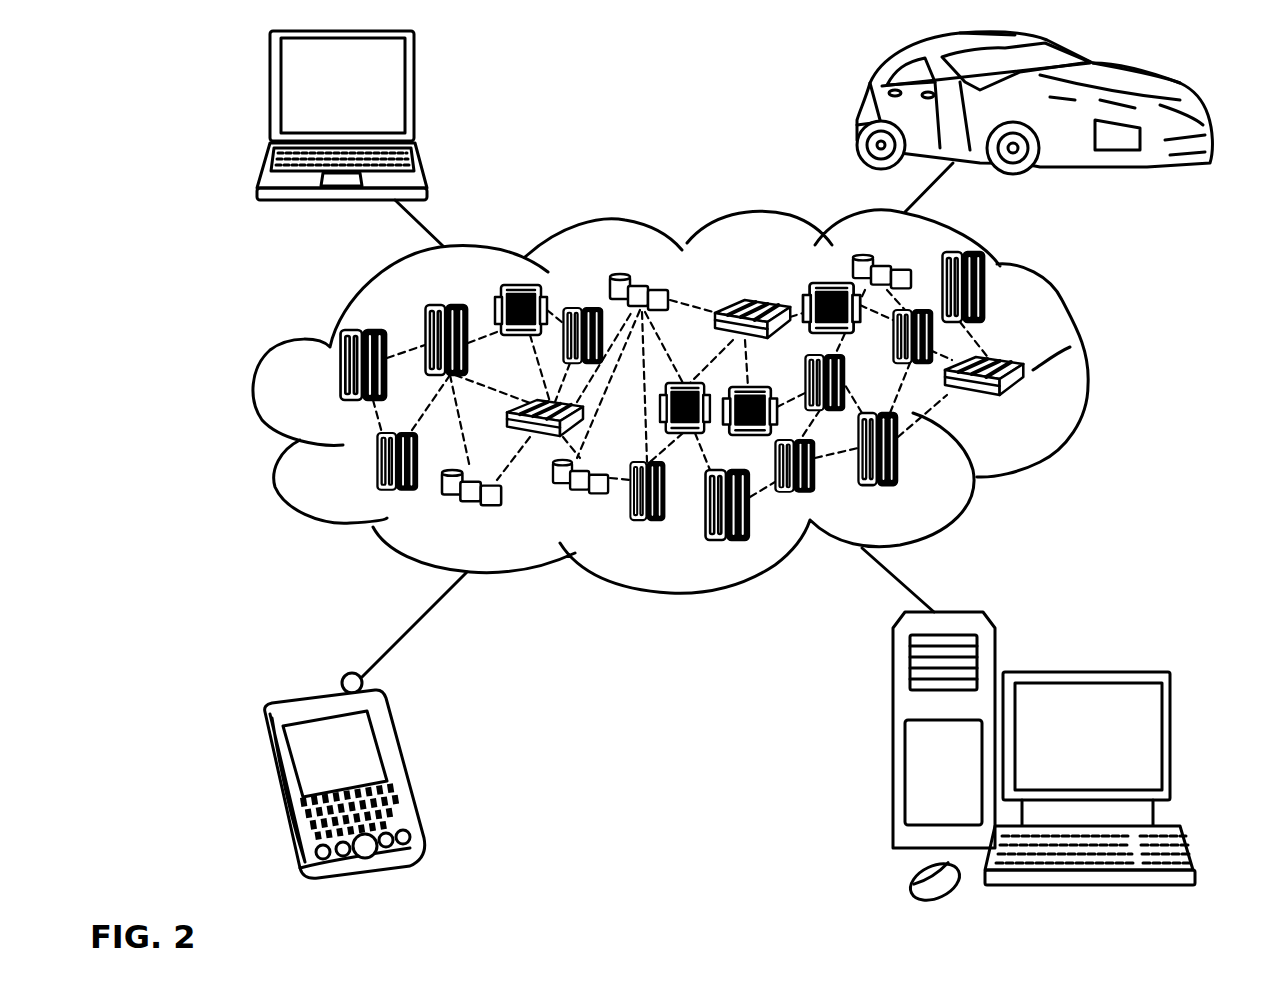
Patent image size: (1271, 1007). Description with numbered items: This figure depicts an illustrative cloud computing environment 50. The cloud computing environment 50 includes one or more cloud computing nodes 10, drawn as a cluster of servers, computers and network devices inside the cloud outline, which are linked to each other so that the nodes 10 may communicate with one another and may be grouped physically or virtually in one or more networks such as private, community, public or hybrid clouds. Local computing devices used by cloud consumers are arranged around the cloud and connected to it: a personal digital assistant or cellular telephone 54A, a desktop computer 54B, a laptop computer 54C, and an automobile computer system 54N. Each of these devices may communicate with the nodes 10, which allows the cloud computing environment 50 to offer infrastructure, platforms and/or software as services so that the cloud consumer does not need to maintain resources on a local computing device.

The cloud computing nodes 10 is at (735, 396).
The cloud computing environment 50 is at (1087, 375).
The personal digital assistant (PDA) or cellular telephone 54A is at (398, 766).
The desktop computer 54B is at (1085, 672).
The laptop computer 54C is at (413, 93).
The automobile computer system 54N is at (860, 108).